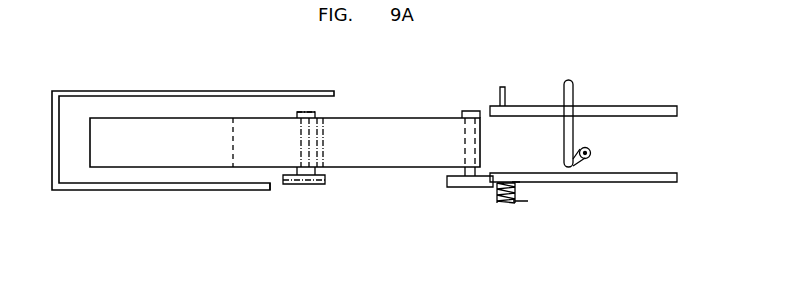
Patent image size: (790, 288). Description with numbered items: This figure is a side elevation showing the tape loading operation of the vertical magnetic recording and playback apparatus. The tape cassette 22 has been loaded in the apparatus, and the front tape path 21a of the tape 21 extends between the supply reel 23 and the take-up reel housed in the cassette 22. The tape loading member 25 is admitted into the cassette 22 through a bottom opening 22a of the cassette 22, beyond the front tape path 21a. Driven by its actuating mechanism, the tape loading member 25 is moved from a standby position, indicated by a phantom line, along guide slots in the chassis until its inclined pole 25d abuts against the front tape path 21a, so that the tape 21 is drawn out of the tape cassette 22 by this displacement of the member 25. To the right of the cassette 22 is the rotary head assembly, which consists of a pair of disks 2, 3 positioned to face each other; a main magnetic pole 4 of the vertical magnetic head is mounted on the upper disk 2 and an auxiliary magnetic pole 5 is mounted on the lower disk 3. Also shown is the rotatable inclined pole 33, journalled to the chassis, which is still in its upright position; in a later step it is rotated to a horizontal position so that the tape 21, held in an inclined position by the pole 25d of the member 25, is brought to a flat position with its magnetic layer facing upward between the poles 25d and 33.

The disk 2 is at (677, 110).
The disk 3 is at (677, 177).
The main magnetic pole 4 is at (505, 95).
The auxiliary magnetic pole 5 is at (505, 207).
The tape 21 is at (402, 130).
The front tape path 21a is at (325, 143).
The tape cassette 22 is at (130, 90).
The bottom opening 22a is at (275, 177).
The supply reel 23 is at (194, 127).
The tape loading member 25 is at (325, 181).
The inclined pole 25d is at (473, 110).
The rotatable inclined pole 33 is at (573, 90).